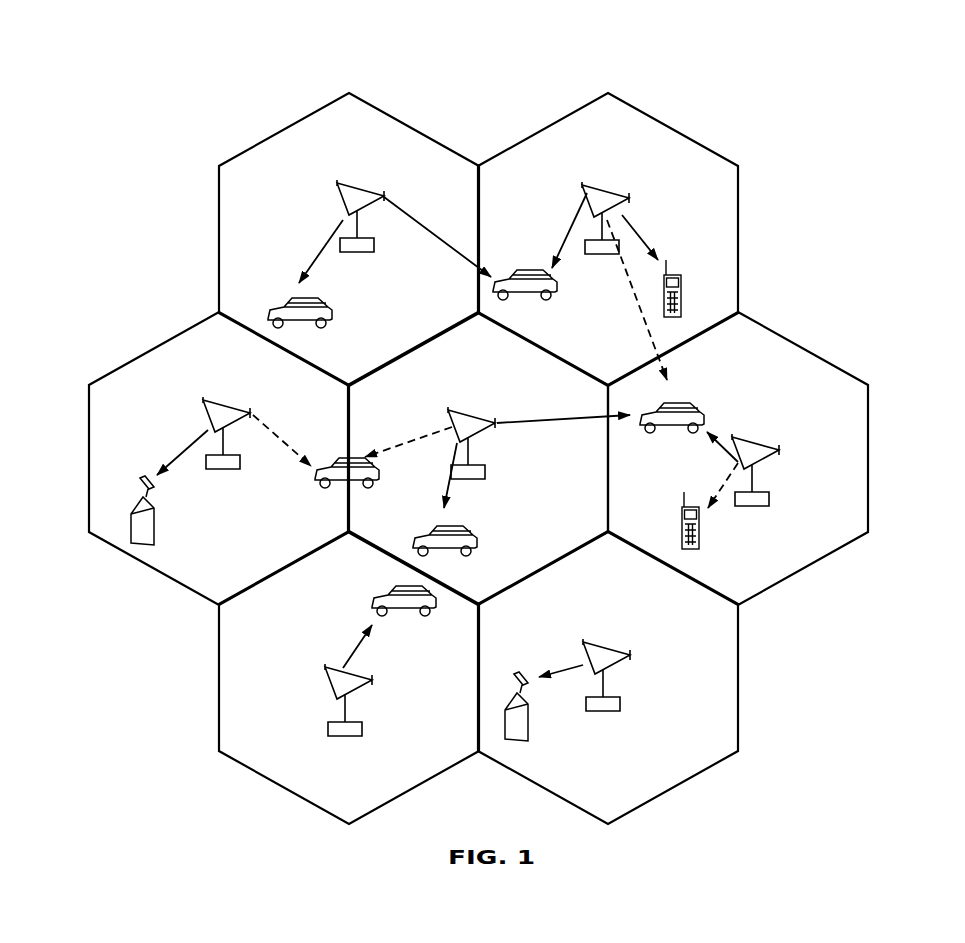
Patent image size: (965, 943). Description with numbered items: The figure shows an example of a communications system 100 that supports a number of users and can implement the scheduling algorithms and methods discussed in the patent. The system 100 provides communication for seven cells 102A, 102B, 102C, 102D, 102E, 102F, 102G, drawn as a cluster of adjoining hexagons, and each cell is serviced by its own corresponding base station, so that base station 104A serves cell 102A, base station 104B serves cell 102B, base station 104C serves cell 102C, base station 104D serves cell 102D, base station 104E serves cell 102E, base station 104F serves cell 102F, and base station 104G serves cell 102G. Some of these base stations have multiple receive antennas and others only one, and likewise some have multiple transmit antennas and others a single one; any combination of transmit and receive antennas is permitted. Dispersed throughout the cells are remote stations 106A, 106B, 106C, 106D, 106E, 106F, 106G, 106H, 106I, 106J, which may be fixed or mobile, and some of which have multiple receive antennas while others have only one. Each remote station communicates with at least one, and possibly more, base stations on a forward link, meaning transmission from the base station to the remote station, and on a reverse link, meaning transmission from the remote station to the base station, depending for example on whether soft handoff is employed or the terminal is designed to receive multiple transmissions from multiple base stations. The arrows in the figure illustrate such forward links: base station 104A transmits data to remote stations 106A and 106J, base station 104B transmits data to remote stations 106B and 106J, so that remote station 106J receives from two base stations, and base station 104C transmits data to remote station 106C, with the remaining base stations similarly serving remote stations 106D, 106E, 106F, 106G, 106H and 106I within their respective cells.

The communications system 100 is at (794, 79).
The cell 102A is at (291, 125).
The cell 102B is at (665, 125).
The cell 102C is at (151, 352).
The cell 102D is at (502, 340).
The cell 102E is at (868, 453).
The cell 102F is at (220, 680).
The cell 102G is at (739, 650).
The base station 104A is at (340, 184).
The base station 104B is at (585, 190).
The base station 104C is at (205, 400).
The base station 104D is at (455, 415).
The base station 104E is at (735, 440).
The base station 104F is at (325, 668).
The base station 104G is at (595, 643).
The remote station 106A is at (298, 300).
The remote station 106B is at (670, 275).
The remote station 106C is at (143, 482).
The remote station 106D is at (442, 530).
The remote station 106E is at (678, 403).
The remote station 106F is at (397, 588).
The remote station 106G is at (522, 678).
The remote station 106H is at (333, 460).
The remote station 106I is at (685, 505).
The remote station 106J is at (532, 272).